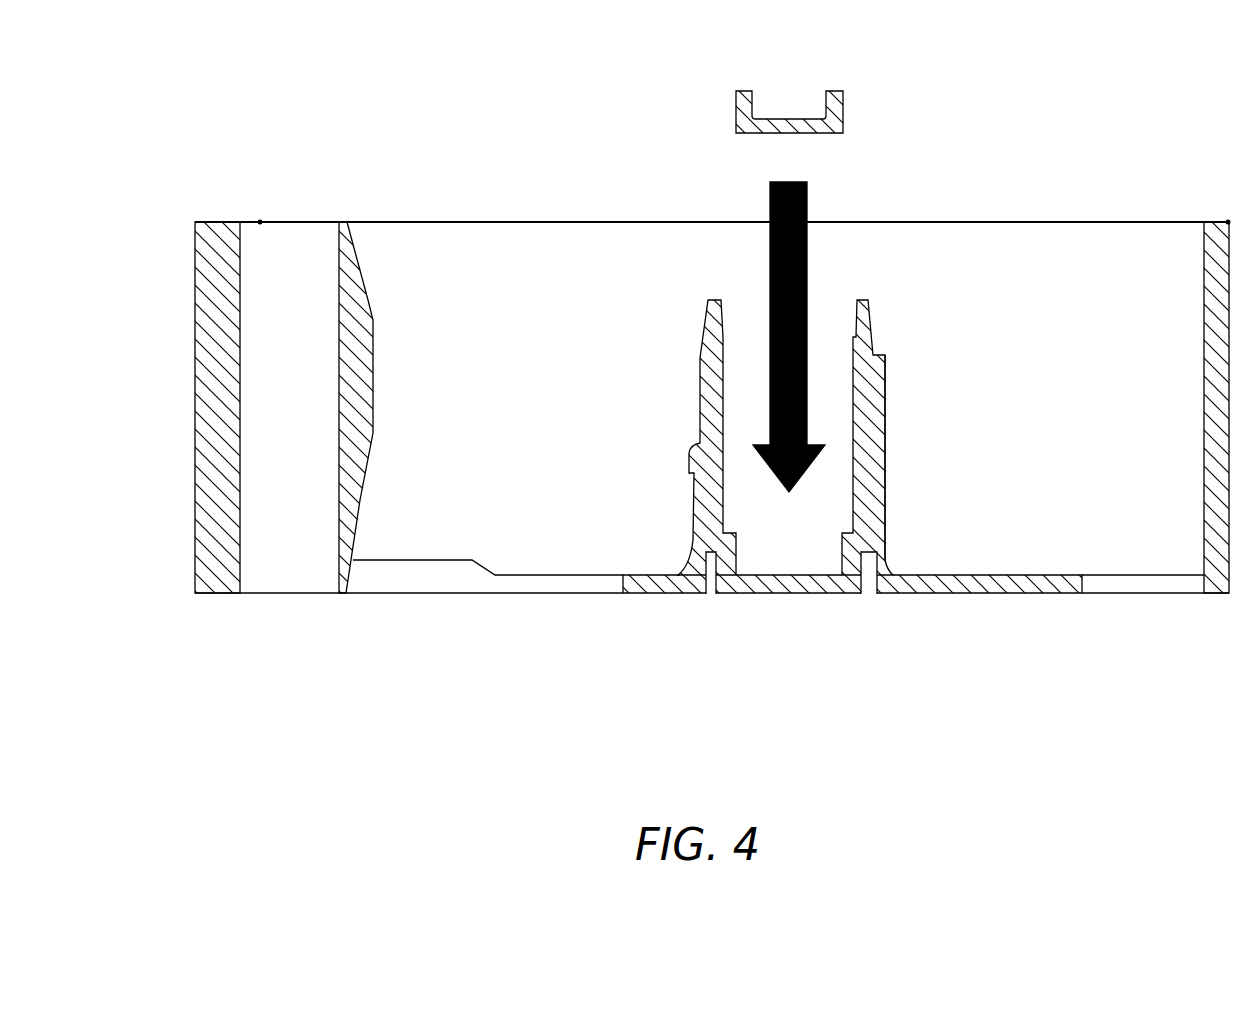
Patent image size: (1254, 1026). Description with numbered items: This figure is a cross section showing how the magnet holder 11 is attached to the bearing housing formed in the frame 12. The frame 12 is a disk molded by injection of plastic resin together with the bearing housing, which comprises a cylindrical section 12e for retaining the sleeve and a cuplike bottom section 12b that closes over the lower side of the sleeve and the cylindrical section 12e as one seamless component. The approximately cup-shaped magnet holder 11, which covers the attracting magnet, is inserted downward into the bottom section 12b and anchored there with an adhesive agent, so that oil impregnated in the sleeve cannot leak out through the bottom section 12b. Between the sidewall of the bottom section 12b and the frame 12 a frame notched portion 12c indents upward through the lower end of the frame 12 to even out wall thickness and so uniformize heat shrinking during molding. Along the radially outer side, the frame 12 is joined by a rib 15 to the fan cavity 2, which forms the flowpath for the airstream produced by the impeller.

The fan cavity 2 is at (357, 373).
The magnet holder 11 is at (776, 127).
The frame 12 is at (913, 593).
The bottom section 12b is at (798, 593).
The frame notched portion 12c is at (708, 576).
The cylindrical section 12e is at (874, 432).
The rib 15 is at (460, 580).